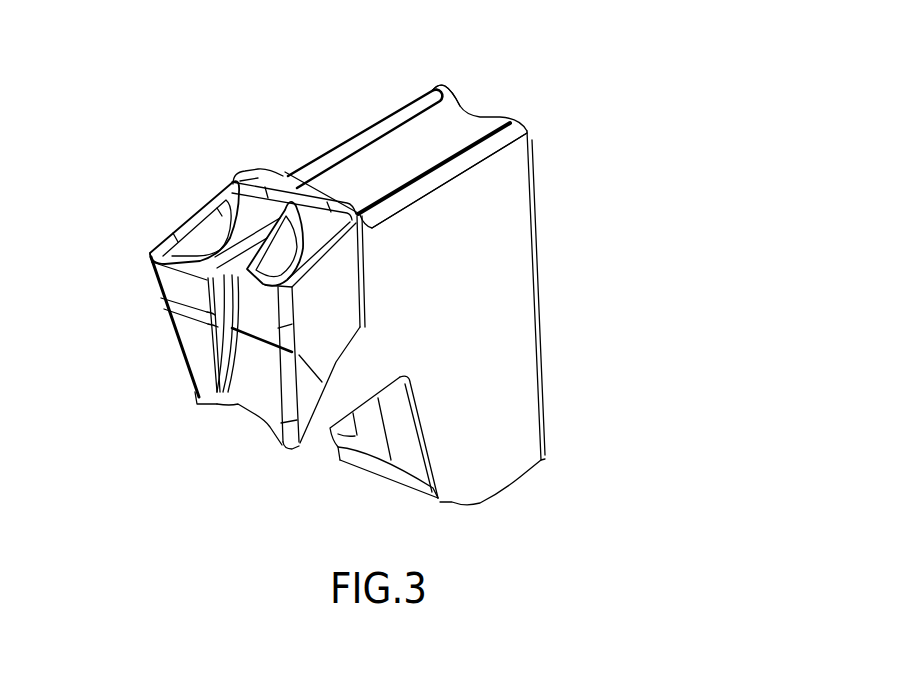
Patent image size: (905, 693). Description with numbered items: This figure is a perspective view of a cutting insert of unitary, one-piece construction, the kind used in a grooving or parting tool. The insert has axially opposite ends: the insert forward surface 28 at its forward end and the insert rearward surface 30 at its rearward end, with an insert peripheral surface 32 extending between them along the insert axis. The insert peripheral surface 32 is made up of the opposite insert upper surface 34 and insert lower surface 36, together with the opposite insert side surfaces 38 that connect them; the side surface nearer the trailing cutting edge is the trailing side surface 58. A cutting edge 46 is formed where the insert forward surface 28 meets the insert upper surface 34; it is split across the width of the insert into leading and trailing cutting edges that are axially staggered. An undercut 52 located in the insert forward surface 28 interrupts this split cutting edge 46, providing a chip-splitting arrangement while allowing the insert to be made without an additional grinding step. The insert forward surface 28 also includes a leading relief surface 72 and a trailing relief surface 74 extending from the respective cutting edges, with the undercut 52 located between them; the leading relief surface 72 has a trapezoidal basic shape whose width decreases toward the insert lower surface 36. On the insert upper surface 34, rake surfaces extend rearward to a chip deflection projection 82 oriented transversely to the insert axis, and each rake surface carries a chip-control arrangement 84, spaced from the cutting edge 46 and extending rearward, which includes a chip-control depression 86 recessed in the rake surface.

The insert forward surface 28 is at (194, 339).
The insert rearward surface 30 is at (498, 117).
The insert peripheral surface 32 is at (438, 90).
The insert upper surface 34 is at (398, 150).
The insert lower surface 36 is at (322, 488).
The insert side surfaces 38 is at (543, 295).
The trailing side surface 58 is at (493, 208).
The cutting edge 46 is at (152, 276).
The undercut 52 is at (255, 321).
The leading relief surface 72 is at (183, 285).
The trailing relief surface 74 is at (260, 327).
The chip deflection projection 82 is at (278, 172).
The chip-control arrangement 84 is at (283, 221).
The chip-control depression 86 is at (250, 215).